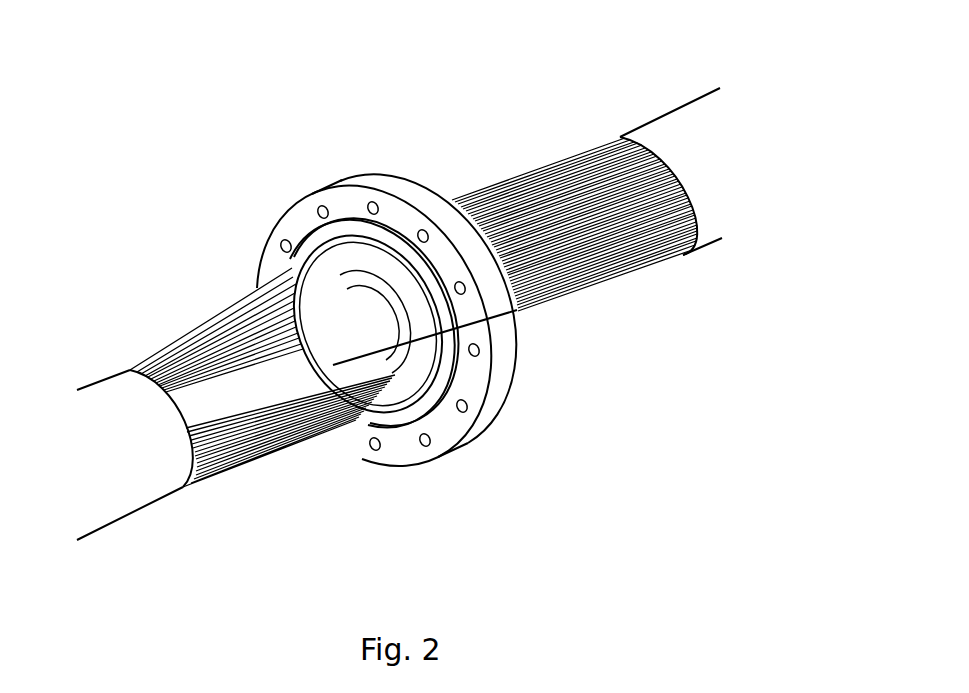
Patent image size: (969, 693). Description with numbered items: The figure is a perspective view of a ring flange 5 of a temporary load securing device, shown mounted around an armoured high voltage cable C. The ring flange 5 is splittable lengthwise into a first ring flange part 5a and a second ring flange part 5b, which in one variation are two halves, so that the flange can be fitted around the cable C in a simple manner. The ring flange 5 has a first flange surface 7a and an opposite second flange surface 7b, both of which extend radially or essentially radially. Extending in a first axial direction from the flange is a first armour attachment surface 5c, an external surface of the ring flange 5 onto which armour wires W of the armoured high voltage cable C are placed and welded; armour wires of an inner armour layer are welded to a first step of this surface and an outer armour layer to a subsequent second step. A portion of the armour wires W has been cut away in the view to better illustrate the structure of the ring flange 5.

The ring flange 5 is at (406, 312).
The first ring flange part 5a is at (357, 281).
The second ring flange part 5b is at (450, 287).
The first armour attachment surface 5c is at (388, 368).
The first flange surface 7a is at (333, 177).
The second flange surface 7b is at (433, 183).
The armour wires W is at (245, 292).
The armoured high voltage cable C is at (670, 108).